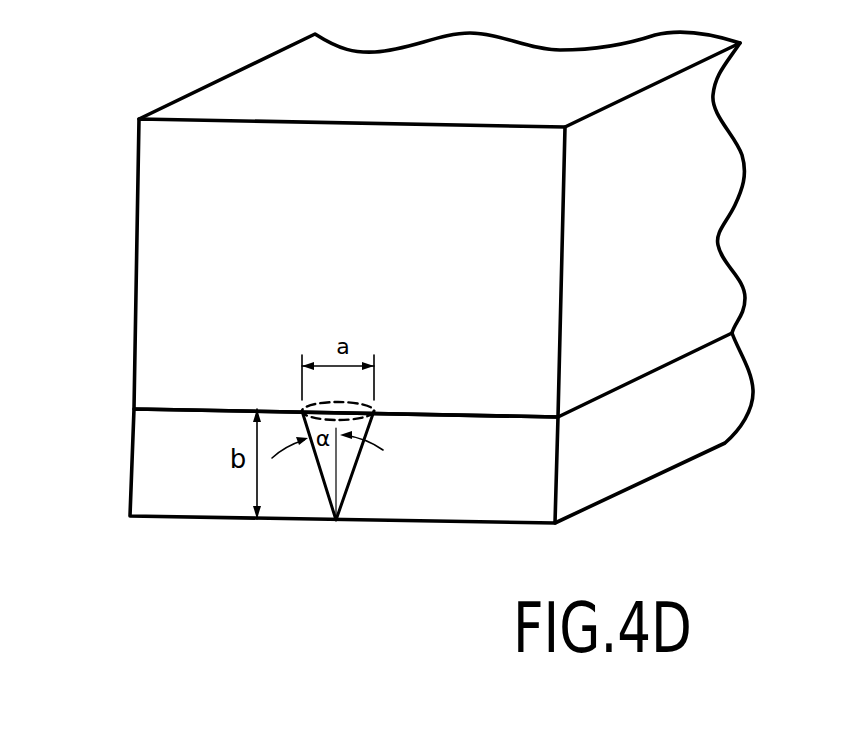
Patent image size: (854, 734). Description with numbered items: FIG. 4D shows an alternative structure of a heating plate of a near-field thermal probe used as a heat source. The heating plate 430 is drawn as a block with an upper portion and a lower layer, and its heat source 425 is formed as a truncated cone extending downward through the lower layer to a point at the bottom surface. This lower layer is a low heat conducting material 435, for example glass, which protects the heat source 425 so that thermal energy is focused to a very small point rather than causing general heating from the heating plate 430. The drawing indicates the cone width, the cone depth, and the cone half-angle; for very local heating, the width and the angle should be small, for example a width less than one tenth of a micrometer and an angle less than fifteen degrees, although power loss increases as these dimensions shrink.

The heating plate 430 is at (133, 322).
The low heat conducting material 435 is at (623, 482).
The heat source 425 is at (336, 532).